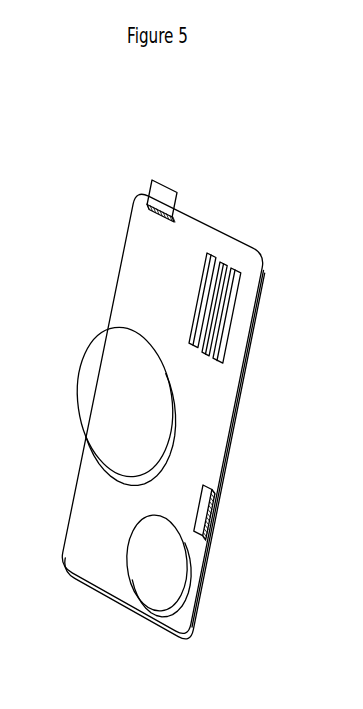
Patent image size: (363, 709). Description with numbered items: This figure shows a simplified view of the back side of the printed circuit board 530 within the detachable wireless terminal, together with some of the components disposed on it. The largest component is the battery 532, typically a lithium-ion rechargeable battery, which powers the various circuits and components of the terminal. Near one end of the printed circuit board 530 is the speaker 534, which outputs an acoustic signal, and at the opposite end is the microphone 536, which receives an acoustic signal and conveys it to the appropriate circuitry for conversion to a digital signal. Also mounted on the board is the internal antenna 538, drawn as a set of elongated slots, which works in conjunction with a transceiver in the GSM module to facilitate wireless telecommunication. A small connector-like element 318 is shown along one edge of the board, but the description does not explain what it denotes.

The printed circuit board 530 is at (123, 260).
The battery 532 is at (92, 372).
The speaker 534 is at (166, 595).
The microphone 536 is at (165, 198).
The internal antenna 538 is at (238, 320).
The connector 318 is at (213, 503).